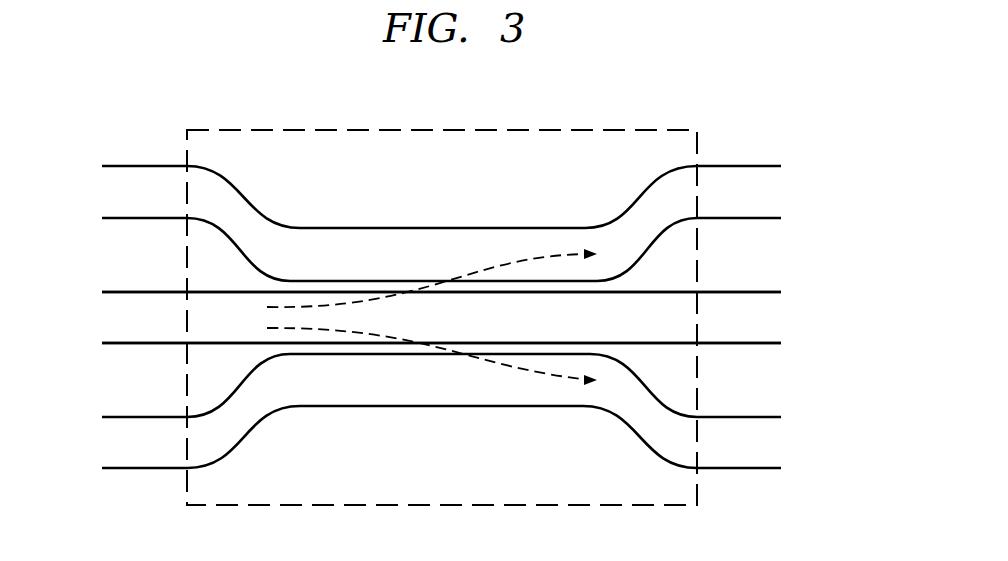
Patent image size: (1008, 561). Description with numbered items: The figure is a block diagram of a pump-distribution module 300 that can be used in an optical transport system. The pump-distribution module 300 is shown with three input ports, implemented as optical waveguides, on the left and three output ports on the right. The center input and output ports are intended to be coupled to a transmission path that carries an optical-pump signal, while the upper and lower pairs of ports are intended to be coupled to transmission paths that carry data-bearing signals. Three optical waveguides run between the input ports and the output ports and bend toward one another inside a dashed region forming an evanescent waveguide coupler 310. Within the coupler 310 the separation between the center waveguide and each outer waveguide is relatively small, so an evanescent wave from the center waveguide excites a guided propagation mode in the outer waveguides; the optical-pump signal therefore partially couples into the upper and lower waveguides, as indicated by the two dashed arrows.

The pump-distribution module 300 is at (470, 88).
The evanescent waveguide coupler 310 is at (560, 129).